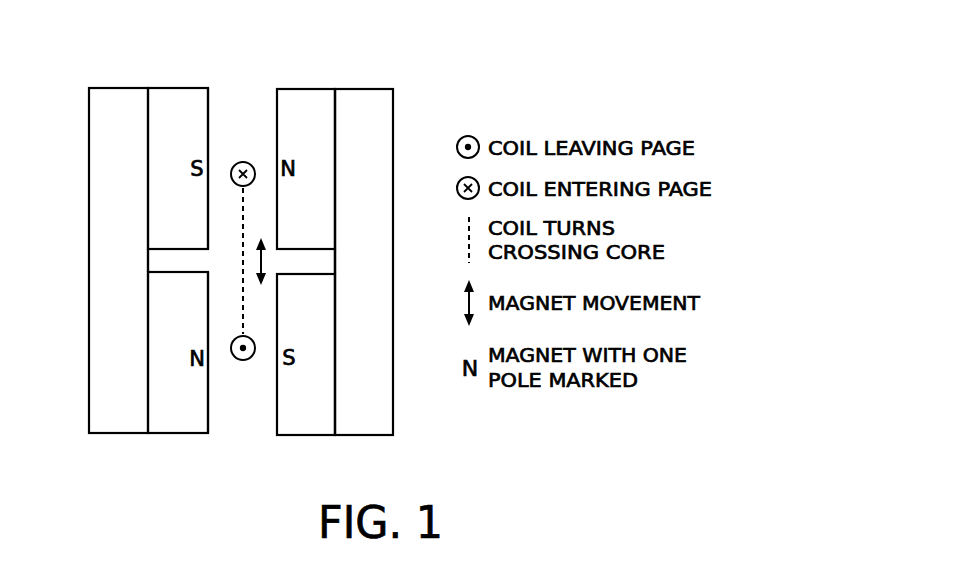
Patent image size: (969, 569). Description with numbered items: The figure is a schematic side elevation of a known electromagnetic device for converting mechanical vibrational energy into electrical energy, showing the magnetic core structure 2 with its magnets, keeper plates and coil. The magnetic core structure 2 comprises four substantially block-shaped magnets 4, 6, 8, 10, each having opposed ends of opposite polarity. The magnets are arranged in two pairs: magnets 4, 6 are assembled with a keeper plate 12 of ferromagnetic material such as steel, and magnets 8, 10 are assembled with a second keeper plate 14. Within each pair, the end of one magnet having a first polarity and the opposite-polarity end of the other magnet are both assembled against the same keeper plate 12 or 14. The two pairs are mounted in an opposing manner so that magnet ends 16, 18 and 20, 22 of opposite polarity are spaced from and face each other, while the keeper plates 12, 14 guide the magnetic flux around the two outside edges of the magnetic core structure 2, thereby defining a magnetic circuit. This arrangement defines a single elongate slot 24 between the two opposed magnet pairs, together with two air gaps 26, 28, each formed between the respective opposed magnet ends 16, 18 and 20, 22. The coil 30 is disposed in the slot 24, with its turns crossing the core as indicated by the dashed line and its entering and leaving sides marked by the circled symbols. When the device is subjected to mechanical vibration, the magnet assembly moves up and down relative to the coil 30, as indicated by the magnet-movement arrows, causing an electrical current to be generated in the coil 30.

The magnetic core structure 2 is at (106, 72).
The magnet 4 is at (156, 88).
The magnet 6 is at (162, 433).
The magnet 8 is at (321, 88).
The magnet 10 is at (330, 437).
The keeper plate 12 is at (103, 433).
The keeper plate 14 is at (386, 435).
The magnet end 16 is at (208, 95).
The magnet end 18 is at (209, 433).
The magnet end 20 is at (277, 97).
The magnet end 22 is at (277, 437).
The elongate slot 24 is at (225, 122).
The air gap 26 is at (160, 260).
The air gap 28 is at (323, 260).
The coil 30 is at (255, 345).